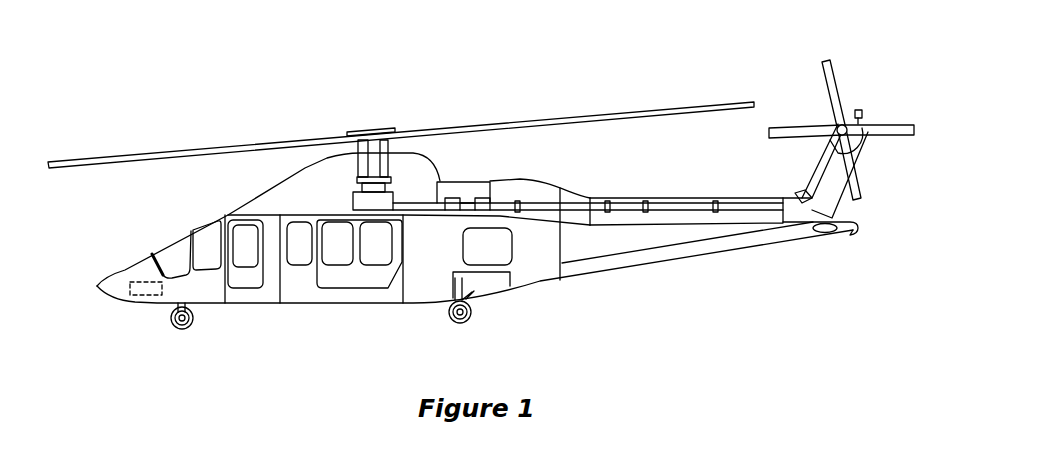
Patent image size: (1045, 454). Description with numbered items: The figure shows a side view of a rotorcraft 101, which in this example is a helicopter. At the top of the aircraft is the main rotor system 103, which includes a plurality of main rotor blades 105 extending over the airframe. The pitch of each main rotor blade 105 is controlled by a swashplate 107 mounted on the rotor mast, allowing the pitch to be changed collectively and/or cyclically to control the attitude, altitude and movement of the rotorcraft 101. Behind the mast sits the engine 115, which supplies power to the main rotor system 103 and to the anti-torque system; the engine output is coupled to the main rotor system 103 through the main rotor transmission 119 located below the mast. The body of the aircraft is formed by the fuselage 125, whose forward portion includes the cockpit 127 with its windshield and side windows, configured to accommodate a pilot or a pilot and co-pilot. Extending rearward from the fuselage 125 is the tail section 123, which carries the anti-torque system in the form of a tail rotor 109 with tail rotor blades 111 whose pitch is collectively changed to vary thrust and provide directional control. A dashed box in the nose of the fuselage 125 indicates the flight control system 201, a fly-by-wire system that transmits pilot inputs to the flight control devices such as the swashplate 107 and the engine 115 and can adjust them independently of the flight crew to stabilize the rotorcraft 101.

The rotorcraft 101 is at (263, 73).
The main rotor system 103 is at (404, 112).
The main rotor blades 105 is at (197, 148).
The swashplate 107 is at (357, 181).
The tail rotor 109 is at (865, 100).
The tail rotor blades 111 is at (892, 137).
The engines 115 is at (463, 188).
The main rotor transmission 119 is at (353, 205).
The tail section 123 is at (705, 256).
The fuselage 125 is at (297, 304).
The cockpit 127 is at (165, 247).
The flight control system 201 is at (142, 297).